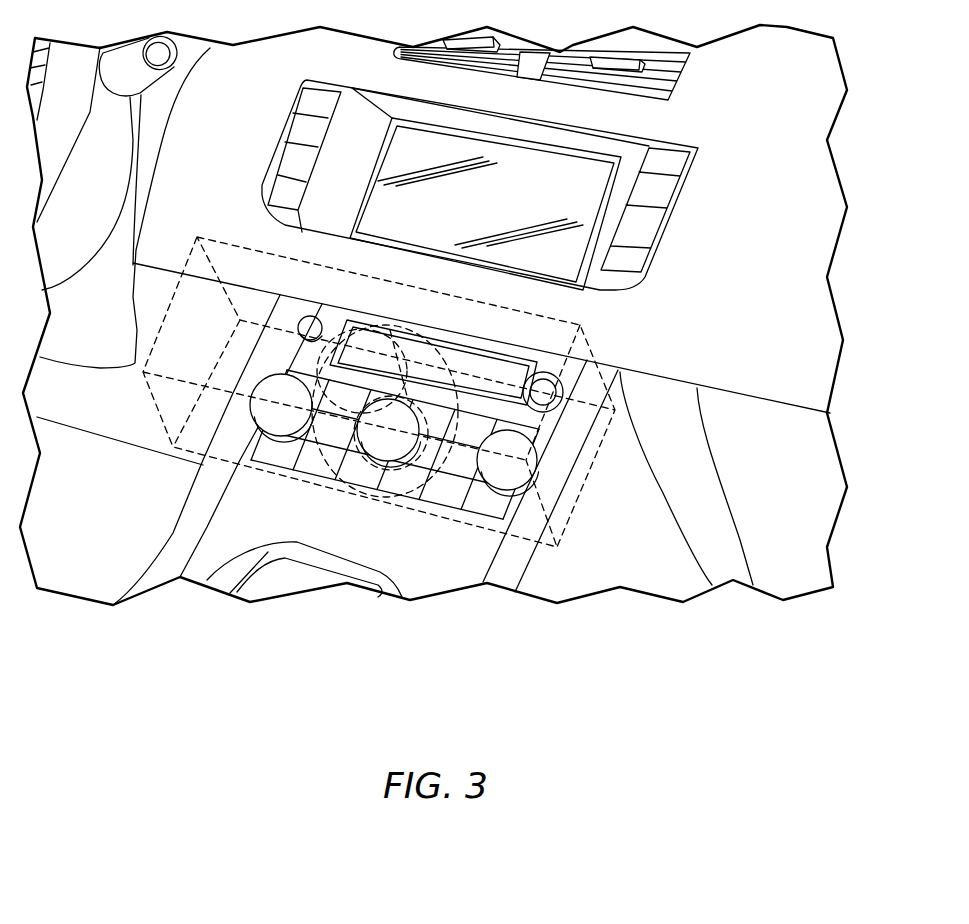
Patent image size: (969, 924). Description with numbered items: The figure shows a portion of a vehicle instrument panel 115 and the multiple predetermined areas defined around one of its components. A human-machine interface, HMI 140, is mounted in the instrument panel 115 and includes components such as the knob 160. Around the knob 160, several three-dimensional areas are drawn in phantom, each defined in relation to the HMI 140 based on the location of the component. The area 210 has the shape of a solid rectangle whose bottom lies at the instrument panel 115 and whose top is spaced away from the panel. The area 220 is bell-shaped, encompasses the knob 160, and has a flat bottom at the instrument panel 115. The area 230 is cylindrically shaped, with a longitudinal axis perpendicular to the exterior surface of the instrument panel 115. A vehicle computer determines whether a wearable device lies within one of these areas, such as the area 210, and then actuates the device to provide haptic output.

The instrument panel 115 is at (787, 195).
The HMI 140 is at (612, 350).
The knob 160 is at (380, 445).
The area 210 is at (148, 432).
The area 220 is at (382, 443).
The area 230 is at (322, 467).